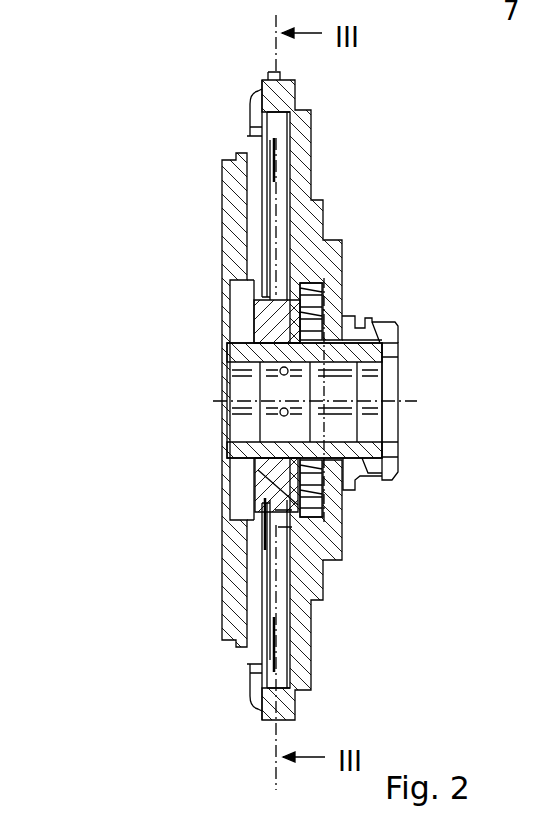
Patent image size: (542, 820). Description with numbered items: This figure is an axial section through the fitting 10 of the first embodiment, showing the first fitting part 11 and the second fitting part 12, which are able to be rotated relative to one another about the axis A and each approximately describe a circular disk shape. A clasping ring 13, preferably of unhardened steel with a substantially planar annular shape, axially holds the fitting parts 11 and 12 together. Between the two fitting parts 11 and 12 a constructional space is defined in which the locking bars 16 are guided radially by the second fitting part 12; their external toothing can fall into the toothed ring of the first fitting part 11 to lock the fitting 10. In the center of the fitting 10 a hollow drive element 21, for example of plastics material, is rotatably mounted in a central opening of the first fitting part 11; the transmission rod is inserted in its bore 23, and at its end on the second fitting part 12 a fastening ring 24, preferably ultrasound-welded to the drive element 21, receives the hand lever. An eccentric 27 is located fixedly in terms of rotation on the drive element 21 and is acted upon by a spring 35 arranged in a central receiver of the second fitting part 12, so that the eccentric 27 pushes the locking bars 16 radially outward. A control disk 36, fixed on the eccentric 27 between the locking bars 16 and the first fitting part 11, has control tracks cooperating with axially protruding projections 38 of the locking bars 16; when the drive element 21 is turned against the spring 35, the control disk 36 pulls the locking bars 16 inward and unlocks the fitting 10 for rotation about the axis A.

The fitting 10 is at (142, 530).
The first fitting part 11 is at (222, 180).
The second fitting part 12 is at (312, 167).
The clasping ring 13 is at (252, 119).
The locking bar 16 is at (273, 250).
The drive element 21 is at (240, 452).
The bore 23 is at (372, 432).
The fastening ring 24 is at (383, 468).
The eccentric 27 is at (276, 483).
The spring 35 is at (312, 311).
The control disk 36 is at (270, 263).
The projection 38 is at (260, 204).
The axis A is at (243, 402).